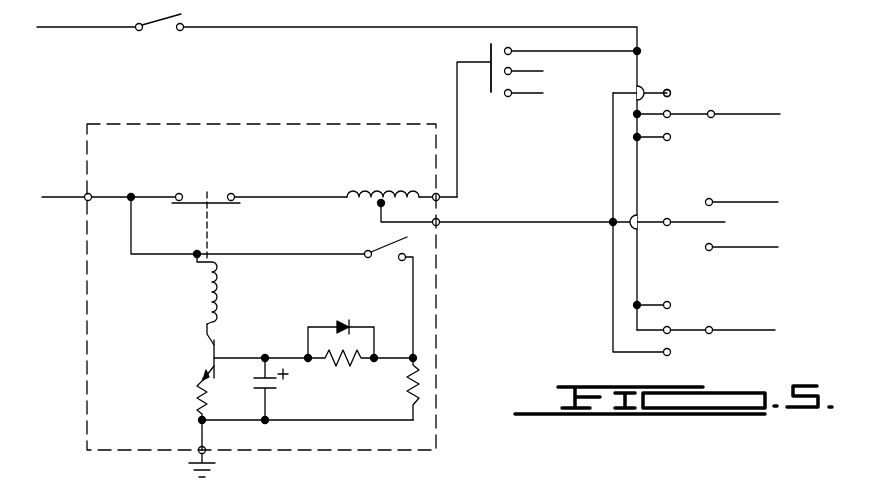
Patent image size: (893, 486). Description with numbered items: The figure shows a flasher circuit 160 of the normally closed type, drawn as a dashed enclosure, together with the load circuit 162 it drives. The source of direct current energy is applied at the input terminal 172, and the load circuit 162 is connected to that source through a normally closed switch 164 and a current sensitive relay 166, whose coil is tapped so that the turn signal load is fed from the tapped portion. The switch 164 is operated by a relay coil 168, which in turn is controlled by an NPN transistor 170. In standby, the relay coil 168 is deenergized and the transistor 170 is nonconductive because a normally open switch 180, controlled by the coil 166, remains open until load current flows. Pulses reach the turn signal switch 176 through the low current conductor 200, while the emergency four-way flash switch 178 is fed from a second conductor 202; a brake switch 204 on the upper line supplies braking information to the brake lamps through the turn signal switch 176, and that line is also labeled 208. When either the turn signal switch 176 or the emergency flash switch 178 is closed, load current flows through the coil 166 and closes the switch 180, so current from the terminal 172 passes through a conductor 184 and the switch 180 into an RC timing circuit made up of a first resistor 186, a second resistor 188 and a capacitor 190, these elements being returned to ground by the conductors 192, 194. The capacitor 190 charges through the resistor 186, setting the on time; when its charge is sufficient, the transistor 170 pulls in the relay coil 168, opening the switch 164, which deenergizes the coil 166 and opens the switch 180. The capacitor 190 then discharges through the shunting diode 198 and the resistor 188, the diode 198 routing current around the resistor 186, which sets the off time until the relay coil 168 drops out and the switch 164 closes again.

The flasher circuit 160 is at (300, 294).
The load circuit 162 is at (590, 269).
The normally closed switch 164 is at (219, 192).
The current sensitive relay 166 is at (366, 190).
The relay coil 168 is at (200, 284).
The NPN transistor 170 is at (208, 350).
The input terminal 172 is at (92, 194).
The turn signal switch 176 is at (680, 97).
The emergency four-way flash switch 178 is at (545, 112).
The normally open switch 180 is at (390, 262).
The conductor 184 is at (289, 252).
The first resistor 186 is at (335, 363).
The second resistor 188 is at (420, 378).
The capacitor 190 is at (243, 380).
The conductor 192 is at (343, 425).
The conductor 194 is at (198, 432).
The shunting diode 198 is at (345, 320).
The conductor 200 is at (540, 190).
The second conductor 202 is at (457, 140).
The brake switch 204 is at (166, 35).
The conductor 208 is at (303, 27).